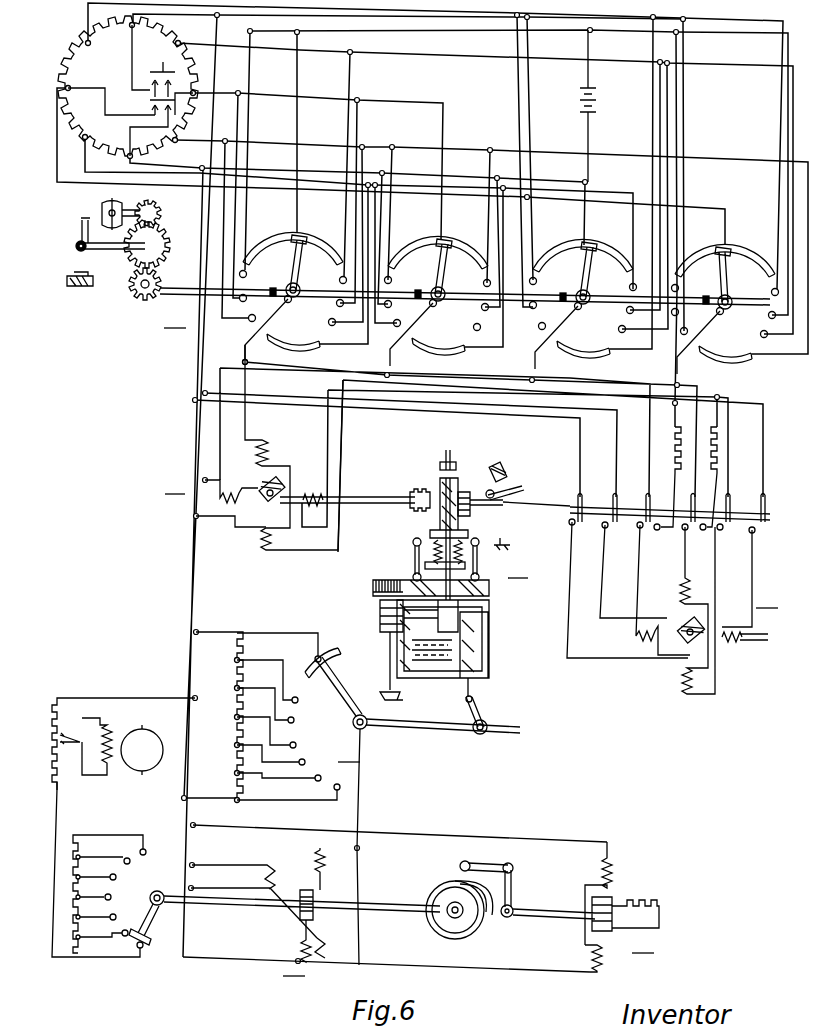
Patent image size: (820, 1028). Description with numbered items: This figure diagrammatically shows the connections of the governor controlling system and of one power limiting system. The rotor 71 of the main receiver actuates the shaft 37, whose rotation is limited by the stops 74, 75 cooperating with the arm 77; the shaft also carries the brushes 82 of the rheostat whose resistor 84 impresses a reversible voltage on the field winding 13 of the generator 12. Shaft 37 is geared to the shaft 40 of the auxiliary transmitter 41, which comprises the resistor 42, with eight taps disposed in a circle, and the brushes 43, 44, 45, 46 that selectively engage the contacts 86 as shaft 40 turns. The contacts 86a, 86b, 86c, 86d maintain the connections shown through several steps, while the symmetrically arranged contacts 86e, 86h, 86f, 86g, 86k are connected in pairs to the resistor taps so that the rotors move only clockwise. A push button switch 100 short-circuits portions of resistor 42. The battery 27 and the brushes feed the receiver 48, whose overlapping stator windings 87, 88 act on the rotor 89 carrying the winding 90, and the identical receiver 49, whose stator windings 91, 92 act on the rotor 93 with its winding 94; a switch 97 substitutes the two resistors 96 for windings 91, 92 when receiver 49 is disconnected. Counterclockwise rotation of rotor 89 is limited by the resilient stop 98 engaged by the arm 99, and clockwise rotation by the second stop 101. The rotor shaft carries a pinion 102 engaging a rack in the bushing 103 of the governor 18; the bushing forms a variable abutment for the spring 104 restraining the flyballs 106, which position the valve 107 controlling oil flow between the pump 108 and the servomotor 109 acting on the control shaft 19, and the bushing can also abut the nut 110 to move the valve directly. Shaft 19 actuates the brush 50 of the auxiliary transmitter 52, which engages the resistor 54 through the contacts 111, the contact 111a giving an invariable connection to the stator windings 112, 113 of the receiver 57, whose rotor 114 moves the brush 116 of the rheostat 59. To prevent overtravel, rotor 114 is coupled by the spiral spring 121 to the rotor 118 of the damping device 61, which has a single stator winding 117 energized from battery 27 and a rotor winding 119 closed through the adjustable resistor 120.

The resistor 42 is at (76, 60).
The push button switch 100 is at (163, 70).
The battery 27 is at (592, 108).
The rotor 71 is at (100, 204).
The arm 77 is at (80, 236).
The stop 74 is at (68, 273).
The shaft 37 is at (108, 254).
The stop 75 is at (96, 274).
The shaft 40 is at (165, 287).
The auxiliary transmitter 41 is at (175, 320).
The brush 43 is at (286, 266).
The brush 44 is at (430, 270).
The brush 45 is at (575, 273).
The brush 46 is at (712, 278).
The contacts 86 is at (242, 305).
The contact 86a is at (293, 243).
The contact 86b is at (438, 246).
The contact 86c is at (583, 249).
The contact 86d is at (725, 254).
The contact 86e is at (329, 275).
The contact 86h is at (470, 281).
The contact 86f is at (617, 284).
The contact 86g is at (759, 291).
The contact 86k is at (301, 345).
The stator winding 87 is at (278, 446).
The stator winding 88 is at (310, 494).
The rotor 89 is at (264, 478).
The winding 90 is at (262, 494).
The receiver 48 is at (175, 486).
The resistors 96 is at (681, 433).
The switch 97 is at (570, 508).
The stator winding 91 is at (682, 583).
The stator winding 92 is at (636, 636).
The rotor 93 is at (700, 620).
The winding 94 is at (680, 622).
The receiver 49 is at (767, 600).
The valve 107 is at (450, 456).
The nut 110 is at (440, 464).
The bushing 103 is at (460, 482).
The pinion 102 is at (412, 493).
The resilient stop 98 is at (506, 466).
The arm 99 is at (517, 492).
The spring 104 is at (458, 545).
The second stop 101 is at (503, 537).
The flyballs 106 is at (411, 543).
The governor 18 is at (445, 581).
The pump 108 is at (380, 616).
The servomotor 109 is at (492, 636).
The contact 111a is at (336, 652).
The resistor 54 is at (232, 680).
The brush 50 is at (342, 702).
The contacts 111 is at (296, 745).
The auxiliary transmitter 52 is at (298, 716).
The brushes 82 is at (80, 744).
The field winding 13 is at (109, 766).
The generator 12 is at (163, 766).
The resistor 84 is at (59, 786).
The control shaft 19 is at (430, 732).
The rheostat 59 is at (70, 840).
The brush 116 is at (148, 921).
The stator winding 112 is at (318, 863).
The rotor 114 is at (314, 891).
The stator winding 113 is at (335, 934).
The receiver 57 is at (385, 900).
The spiral spring 121 is at (485, 932).
The stator winding 117 is at (613, 870).
The rotor 118 is at (611, 898).
The winding 119 is at (592, 930).
The adjustable resistor 120 is at (655, 905).
The damping device 61 is at (598, 907).